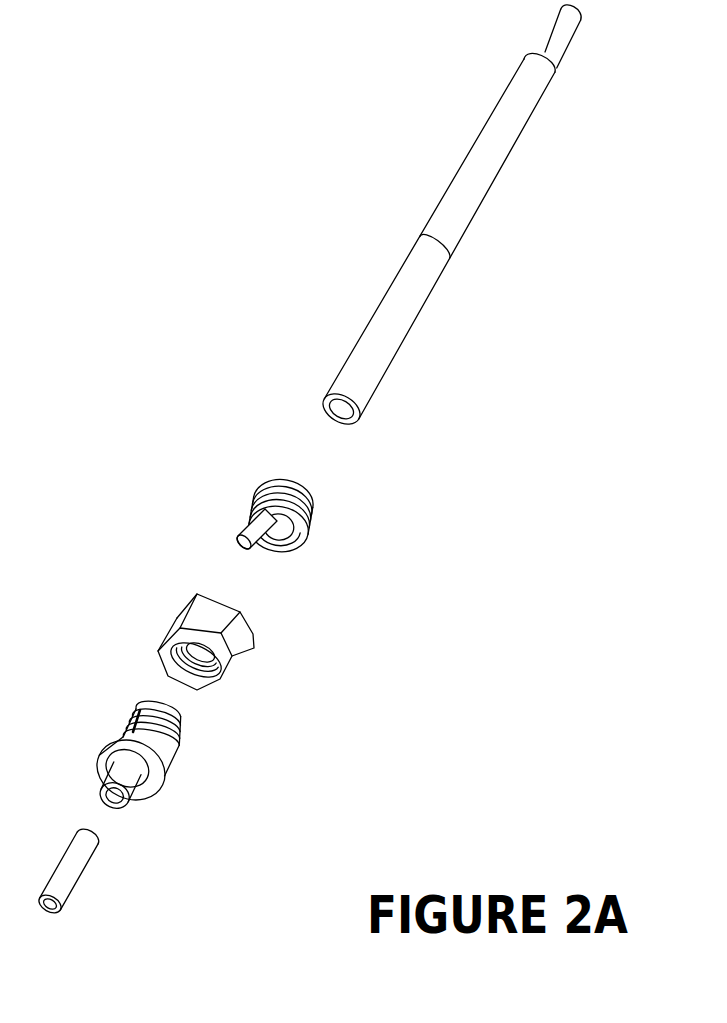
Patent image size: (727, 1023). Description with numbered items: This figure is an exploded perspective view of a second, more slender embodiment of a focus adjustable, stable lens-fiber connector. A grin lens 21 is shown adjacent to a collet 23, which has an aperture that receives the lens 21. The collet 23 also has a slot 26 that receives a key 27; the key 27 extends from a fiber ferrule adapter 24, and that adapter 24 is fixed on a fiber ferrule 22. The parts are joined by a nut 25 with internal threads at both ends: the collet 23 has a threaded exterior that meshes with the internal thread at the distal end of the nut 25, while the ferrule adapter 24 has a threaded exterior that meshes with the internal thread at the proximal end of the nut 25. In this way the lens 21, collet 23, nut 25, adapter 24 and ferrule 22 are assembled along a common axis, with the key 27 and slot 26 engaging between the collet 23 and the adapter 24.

The grin lens 21 is at (62, 880).
The fiber ferrule 22 is at (415, 300).
The collet 23 is at (166, 757).
The fiber ferrule adapter 24 is at (313, 515).
The nut 25 is at (250, 645).
The slot 26 is at (140, 707).
The key 27 is at (237, 528).